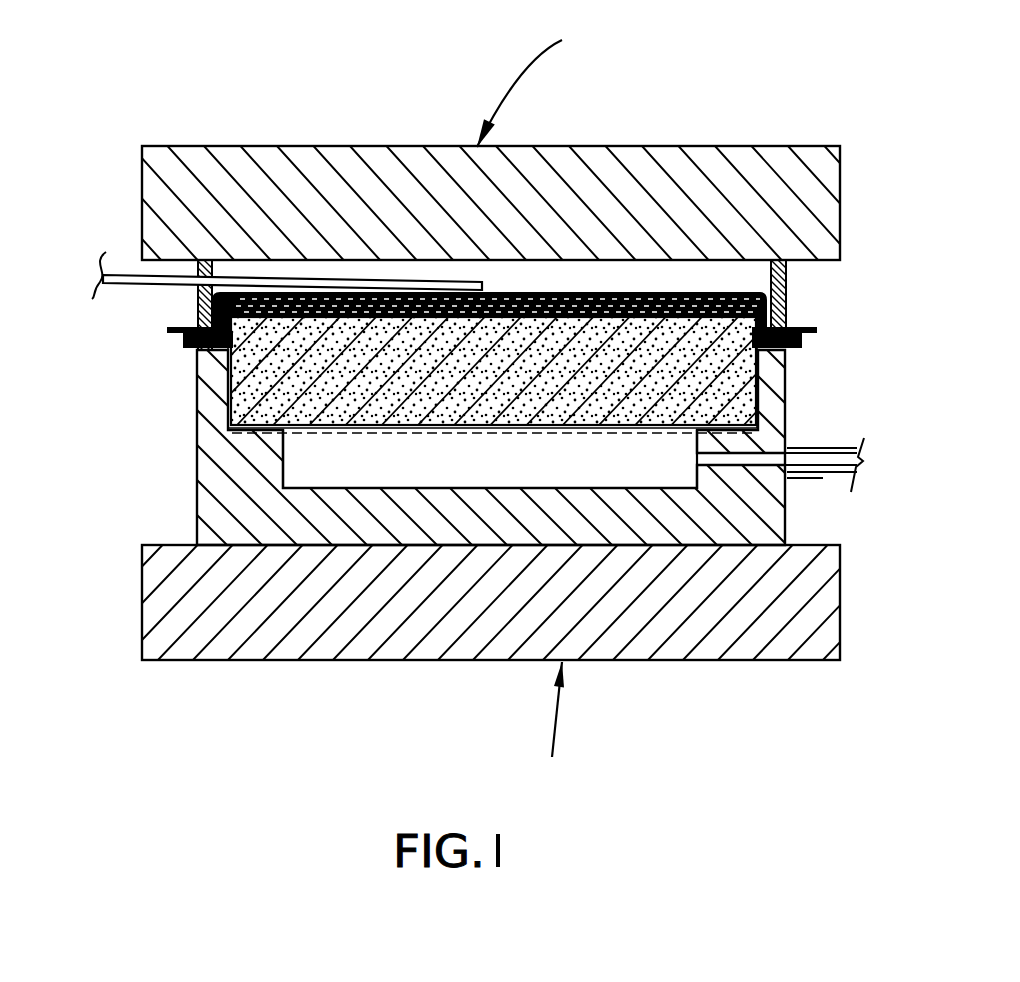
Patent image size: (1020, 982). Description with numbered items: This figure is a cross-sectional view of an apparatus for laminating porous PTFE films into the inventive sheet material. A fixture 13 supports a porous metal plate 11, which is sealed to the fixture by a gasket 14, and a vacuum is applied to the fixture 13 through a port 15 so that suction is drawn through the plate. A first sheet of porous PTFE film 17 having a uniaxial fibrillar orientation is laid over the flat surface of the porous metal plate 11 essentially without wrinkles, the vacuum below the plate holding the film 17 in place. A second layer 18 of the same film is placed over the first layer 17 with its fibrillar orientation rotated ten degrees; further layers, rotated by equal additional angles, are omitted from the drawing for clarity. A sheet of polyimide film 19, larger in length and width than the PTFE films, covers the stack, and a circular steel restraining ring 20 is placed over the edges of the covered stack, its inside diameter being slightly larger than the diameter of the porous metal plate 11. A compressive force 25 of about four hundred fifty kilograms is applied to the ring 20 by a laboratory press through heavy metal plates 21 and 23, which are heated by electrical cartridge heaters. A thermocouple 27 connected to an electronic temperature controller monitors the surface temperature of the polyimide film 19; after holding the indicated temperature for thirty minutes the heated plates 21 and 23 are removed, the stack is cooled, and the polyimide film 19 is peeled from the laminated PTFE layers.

The porous metal plate 11 is at (228, 422).
The fixture 13 is at (197, 493).
The gasket 14 is at (240, 428).
The port 15 is at (822, 447).
The porous PTFE film 17 is at (788, 348).
The second layer 18 is at (800, 340).
The polyimide film 19 is at (193, 323).
The restraining ring 20 is at (187, 295).
The metal plate 21 is at (403, 147).
The metal plate 23 is at (385, 662).
The compressive force 25 is at (543, 405).
The thermocouple 27 is at (122, 276).